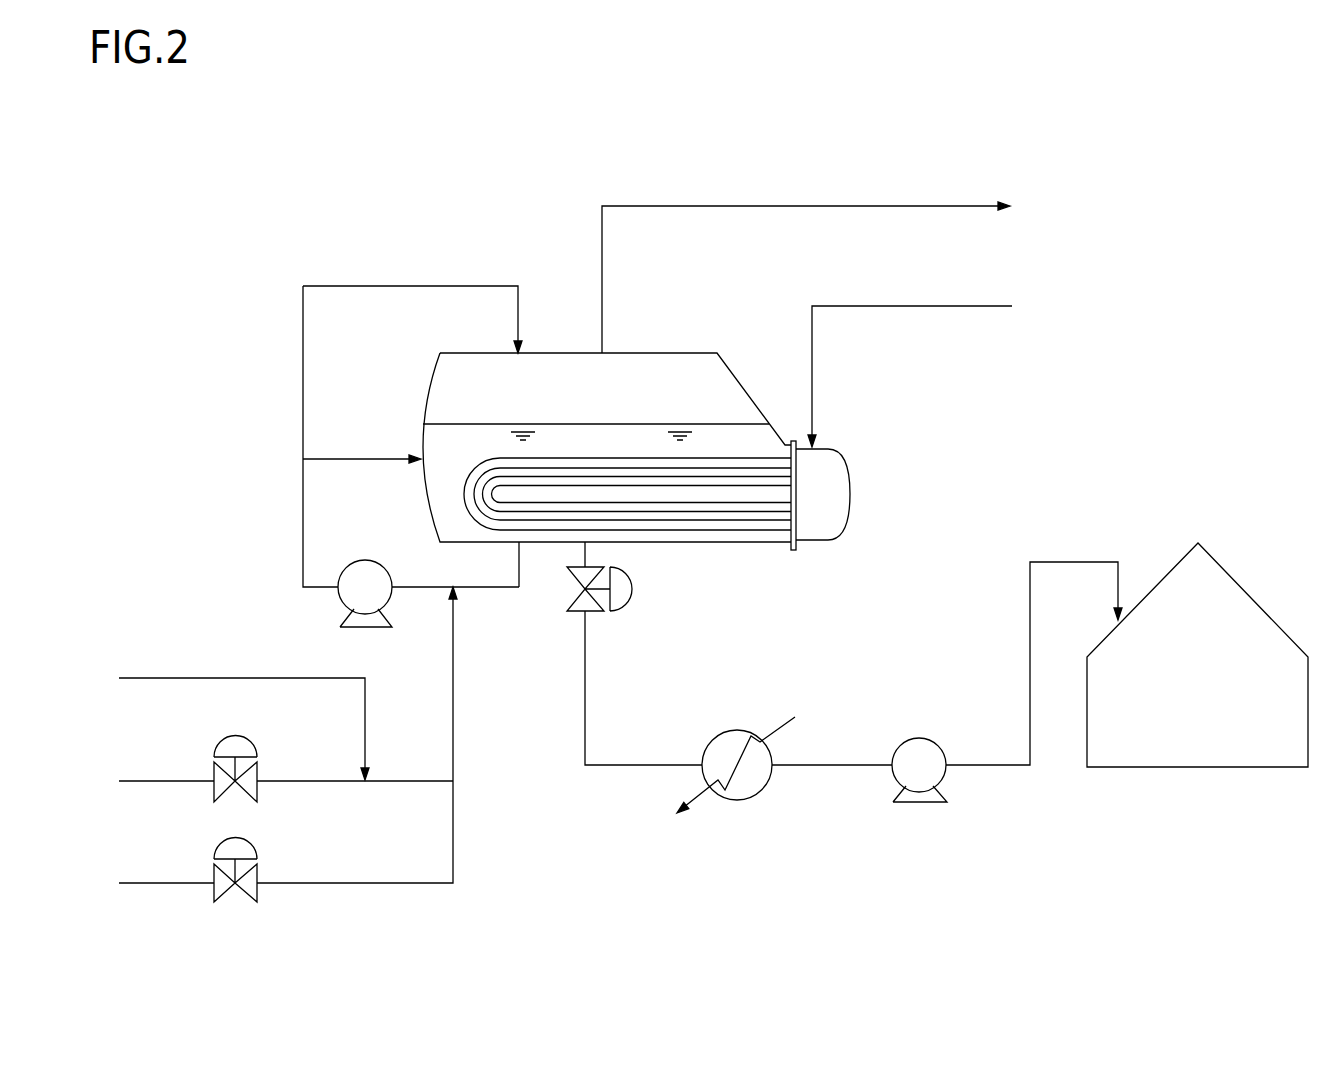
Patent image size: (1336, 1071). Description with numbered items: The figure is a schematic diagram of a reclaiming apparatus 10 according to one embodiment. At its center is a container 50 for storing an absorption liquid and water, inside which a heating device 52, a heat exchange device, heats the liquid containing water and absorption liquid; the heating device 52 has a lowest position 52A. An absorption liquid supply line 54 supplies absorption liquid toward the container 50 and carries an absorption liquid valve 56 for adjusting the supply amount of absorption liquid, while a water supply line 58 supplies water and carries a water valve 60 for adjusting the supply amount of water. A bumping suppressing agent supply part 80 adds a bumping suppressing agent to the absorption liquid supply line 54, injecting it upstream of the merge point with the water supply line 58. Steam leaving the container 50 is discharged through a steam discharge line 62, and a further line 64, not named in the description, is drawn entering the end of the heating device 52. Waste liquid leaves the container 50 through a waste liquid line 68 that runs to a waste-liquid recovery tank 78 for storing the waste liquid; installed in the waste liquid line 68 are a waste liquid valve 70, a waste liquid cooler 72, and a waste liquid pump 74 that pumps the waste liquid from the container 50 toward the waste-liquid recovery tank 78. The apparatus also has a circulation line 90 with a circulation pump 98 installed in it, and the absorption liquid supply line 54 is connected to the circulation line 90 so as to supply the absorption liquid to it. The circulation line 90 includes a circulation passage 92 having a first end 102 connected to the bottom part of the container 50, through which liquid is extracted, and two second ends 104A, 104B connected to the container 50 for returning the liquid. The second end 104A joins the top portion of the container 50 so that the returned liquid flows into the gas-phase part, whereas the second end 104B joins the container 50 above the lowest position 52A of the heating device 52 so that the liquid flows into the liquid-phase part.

The reclaiming apparatus 10 is at (1260, 188).
The container 50 is at (692, 353).
The heating device 52 is at (692, 518).
The lowest position of the heating device 52A is at (750, 530).
The absorption liquid supply line 54 is at (157, 781).
The absorption liquid valve 56 is at (256, 748).
The water supply line 58 is at (150, 883).
The water valve 60 is at (256, 854).
The steam discharge line 62 is at (735, 206).
The heating medium supply pipe 64 is at (928, 306).
The waste liquid line 68 is at (585, 694).
The waste liquid valve 70 is at (632, 592).
The waste liquid cooler 72 is at (737, 800).
The waste liquid pump 74 is at (940, 740).
The waste-liquid recovery tank 78 is at (1275, 620).
The bumping suppressing agent supply part 80 is at (155, 678).
The circulation line 90 is at (397, 452).
The circulation passage 92 is at (303, 436).
The circulation pump 98 is at (367, 559).
The first end 102 is at (519, 545).
The second end 104A is at (520, 352).
The second end 104B is at (419, 458).